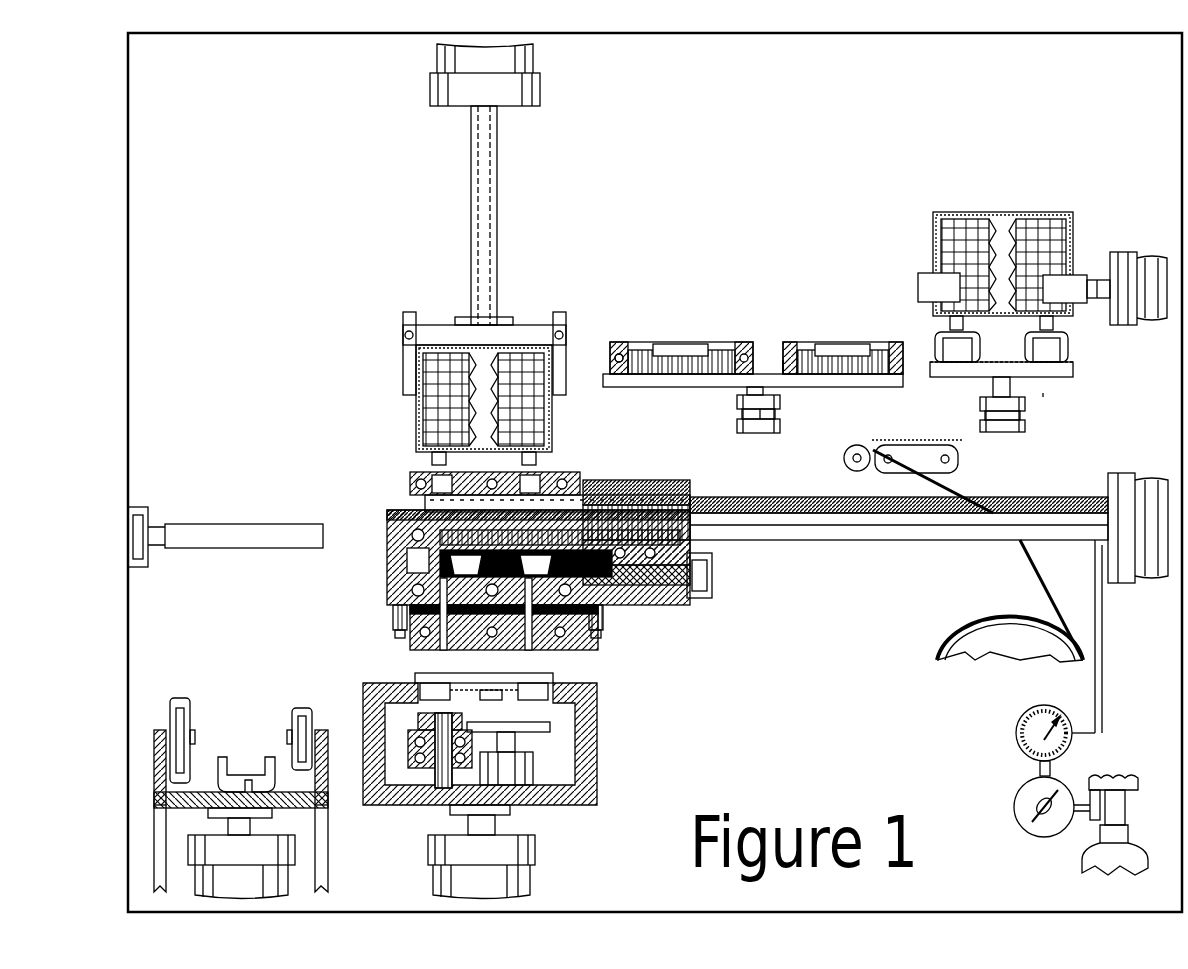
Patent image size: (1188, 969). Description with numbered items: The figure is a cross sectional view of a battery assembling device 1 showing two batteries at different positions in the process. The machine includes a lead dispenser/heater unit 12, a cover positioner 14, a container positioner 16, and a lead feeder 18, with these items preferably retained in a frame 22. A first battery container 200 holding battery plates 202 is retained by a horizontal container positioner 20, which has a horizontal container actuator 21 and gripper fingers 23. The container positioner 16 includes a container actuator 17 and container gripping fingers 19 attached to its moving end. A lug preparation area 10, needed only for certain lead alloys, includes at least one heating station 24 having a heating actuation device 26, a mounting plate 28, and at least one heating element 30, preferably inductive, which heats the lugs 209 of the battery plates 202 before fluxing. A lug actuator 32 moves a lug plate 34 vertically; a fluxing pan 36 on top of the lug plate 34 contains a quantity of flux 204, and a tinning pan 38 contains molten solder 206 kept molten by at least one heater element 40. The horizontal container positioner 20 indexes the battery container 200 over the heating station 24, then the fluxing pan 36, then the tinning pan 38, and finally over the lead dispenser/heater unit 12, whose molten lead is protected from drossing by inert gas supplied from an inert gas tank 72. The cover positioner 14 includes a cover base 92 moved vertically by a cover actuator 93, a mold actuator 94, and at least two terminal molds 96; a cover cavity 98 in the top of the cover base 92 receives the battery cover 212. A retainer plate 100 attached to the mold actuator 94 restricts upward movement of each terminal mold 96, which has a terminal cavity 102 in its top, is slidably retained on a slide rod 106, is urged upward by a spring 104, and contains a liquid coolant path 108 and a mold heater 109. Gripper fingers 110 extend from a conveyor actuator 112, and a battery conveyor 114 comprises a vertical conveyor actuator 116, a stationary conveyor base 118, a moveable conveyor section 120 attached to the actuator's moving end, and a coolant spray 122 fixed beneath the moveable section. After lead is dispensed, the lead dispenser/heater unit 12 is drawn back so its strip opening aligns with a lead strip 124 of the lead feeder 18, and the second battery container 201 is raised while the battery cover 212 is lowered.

The battery assembling device 1 is at (318, 42).
The lug preparation area 10 is at (862, 155).
The lead dispenser/heater unit 12 is at (655, 613).
The cover positioner 14 is at (630, 725).
The container positioner 16 is at (548, 207).
The container actuator 17 is at (541, 90).
The lead feeder 18 is at (940, 620).
The container gripping fingers 19 is at (403, 358).
The horizontal container positioner 20 is at (1092, 352).
The horizontal container actuator 21 is at (1152, 322).
The frame 22 is at (778, 42).
The gripper fingers 23 is at (918, 276).
The heating station 24 is at (1043, 397).
The heating actuation device 26 is at (982, 401).
The mounting plate 28 is at (1072, 376).
The heating element 30 is at (910, 327).
The lug actuator 32 is at (737, 412).
The lug plate 34 is at (640, 387).
The fluxing pan 36 is at (783, 360).
The tinning pan 38 is at (707, 304).
The heater element 40 is at (612, 343).
The inert gas tank 72 is at (1007, 772).
The cover base 92 is at (597, 697).
The cover actuator 93 is at (535, 852).
The mold actuator 94 is at (533, 763).
The terminal mold 96 is at (415, 737).
The cover cavity 98 is at (417, 683).
The retainer plate 100 is at (550, 728).
The terminal cavity 102 is at (447, 713).
The spring 104 is at (431, 764).
The slide rod 106 is at (428, 764).
The liquid coolant path 108 is at (419, 764).
The mold heater 109 is at (416, 745).
The gripper fingers 110 is at (261, 523).
The conveyor actuator 112 is at (146, 507).
The battery conveyor 114 is at (243, 670).
The vertical conveyor actuator 116 is at (295, 842).
The stationary conveyor base 118 is at (152, 892).
The moveable conveyor section 120 is at (155, 730).
The coolant spray 122 is at (218, 757).
The lead strip 124 is at (873, 480).
The battery container 200 is at (1046, 233).
The battery container 201 is at (417, 405).
The battery plates 202 is at (1052, 238).
The flux 204 is at (800, 345).
The molten solder 206 is at (723, 345).
The lugs 209 is at (958, 322).
The battery cover 212 is at (553, 677).